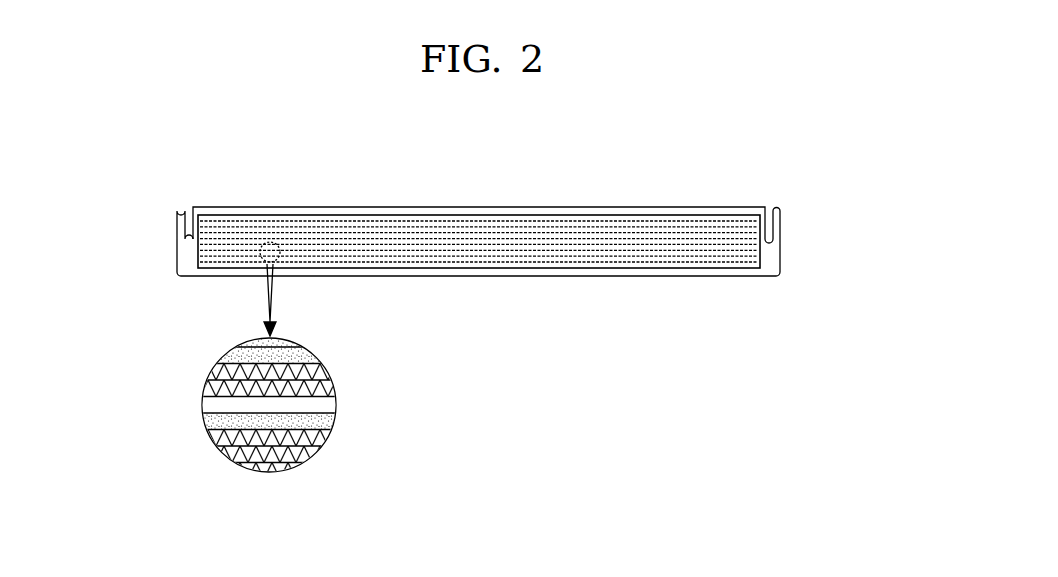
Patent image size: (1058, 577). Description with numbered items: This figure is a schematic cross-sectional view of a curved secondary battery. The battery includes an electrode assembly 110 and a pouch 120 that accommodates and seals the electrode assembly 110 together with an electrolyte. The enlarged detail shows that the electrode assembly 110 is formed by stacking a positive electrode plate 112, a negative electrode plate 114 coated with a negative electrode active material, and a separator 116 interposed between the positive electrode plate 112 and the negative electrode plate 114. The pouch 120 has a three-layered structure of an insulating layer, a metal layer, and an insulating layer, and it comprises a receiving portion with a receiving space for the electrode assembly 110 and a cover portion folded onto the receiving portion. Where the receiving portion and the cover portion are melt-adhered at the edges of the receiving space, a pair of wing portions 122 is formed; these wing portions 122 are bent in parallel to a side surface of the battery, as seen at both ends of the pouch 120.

The electrode assembly 110 is at (344, 405).
The positive electrode plate 112 is at (333, 390).
The negative electrode plate 114 is at (333, 425).
The separator 116 is at (333, 407).
The pouch 120 is at (700, 207).
The wing portions 122 is at (177, 212).